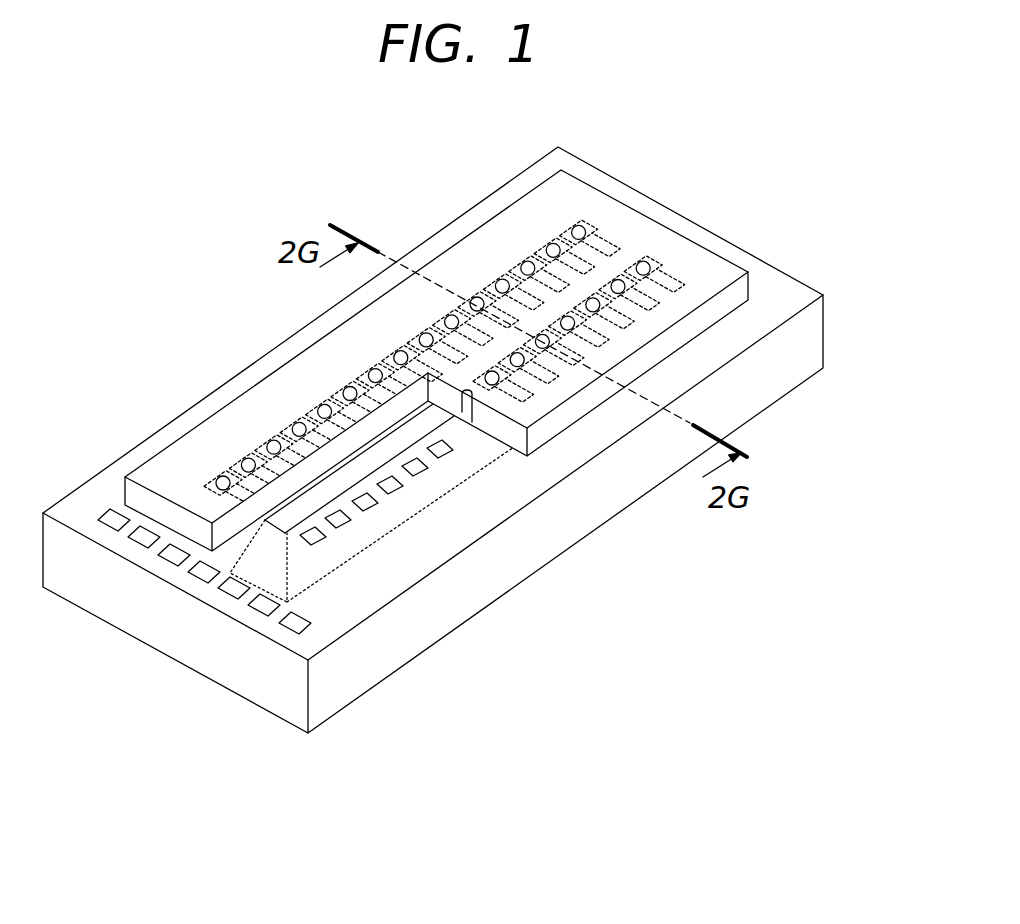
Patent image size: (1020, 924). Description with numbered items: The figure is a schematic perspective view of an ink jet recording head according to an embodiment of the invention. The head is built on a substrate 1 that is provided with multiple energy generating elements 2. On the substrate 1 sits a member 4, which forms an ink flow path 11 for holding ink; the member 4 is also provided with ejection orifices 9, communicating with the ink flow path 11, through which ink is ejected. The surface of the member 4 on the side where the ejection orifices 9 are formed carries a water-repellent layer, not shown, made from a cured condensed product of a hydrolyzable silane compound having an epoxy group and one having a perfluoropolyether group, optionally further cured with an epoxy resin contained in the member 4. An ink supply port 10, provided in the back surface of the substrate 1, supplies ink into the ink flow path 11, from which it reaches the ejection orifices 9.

The substrate 1 is at (642, 188).
The energy generating elements 2 is at (342, 525).
The member 4 is at (740, 290).
The ejection orifices 9 is at (484, 373).
The ink supply port 10 is at (283, 524).
The ink flow path 11 is at (406, 418).